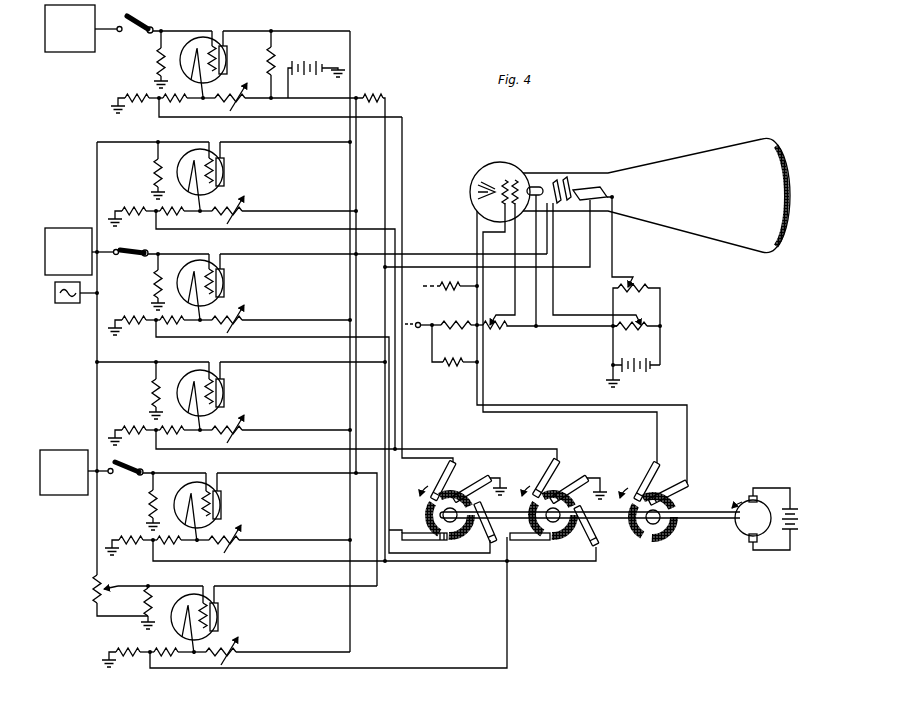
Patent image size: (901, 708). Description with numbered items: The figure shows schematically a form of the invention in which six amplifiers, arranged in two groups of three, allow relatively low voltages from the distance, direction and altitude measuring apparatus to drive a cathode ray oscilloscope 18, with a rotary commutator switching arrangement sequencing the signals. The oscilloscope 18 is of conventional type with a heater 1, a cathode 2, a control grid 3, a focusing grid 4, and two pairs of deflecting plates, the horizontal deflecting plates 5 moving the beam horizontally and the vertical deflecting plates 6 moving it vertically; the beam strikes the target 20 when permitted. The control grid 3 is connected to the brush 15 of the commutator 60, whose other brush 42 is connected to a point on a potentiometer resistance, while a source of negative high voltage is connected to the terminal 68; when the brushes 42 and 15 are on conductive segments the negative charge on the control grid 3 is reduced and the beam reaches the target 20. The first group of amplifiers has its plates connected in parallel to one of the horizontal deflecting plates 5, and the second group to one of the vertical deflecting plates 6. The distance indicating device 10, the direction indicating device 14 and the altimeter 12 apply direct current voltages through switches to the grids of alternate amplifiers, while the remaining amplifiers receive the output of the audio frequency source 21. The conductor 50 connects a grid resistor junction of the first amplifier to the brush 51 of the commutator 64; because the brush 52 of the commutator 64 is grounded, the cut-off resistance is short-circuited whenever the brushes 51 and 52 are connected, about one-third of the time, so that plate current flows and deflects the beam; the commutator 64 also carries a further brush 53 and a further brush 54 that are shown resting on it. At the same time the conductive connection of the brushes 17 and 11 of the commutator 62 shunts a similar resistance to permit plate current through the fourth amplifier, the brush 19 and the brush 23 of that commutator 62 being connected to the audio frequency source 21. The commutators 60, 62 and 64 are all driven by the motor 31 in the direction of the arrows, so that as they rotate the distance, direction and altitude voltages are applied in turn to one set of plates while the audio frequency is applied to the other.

The heater 1 is at (478, 190).
The cathode 2 is at (489, 181).
The control grid 3 is at (504, 178).
The focusing grid 4 is at (516, 178).
The horizontal deflecting plates 5 is at (559, 179).
The vertical deflecting plates 6 is at (588, 186).
The distance indicating device 10 is at (52, 52).
The brush 11 is at (587, 477).
The altimeter 12 is at (78, 450).
The direction indicating device 14 is at (83, 228).
The brush 15 is at (682, 490).
The brush 17 is at (560, 475).
The cathode ray tube 18 is at (635, 193).
The brush 19 is at (529, 540).
The target 20 is at (794, 195).
The source of audio frequency oscillations 21 is at (55, 301).
The brush 23 is at (595, 531).
The motor 31 is at (738, 527).
The brush 42 is at (657, 478).
The conductor 50 is at (408, 163).
The brush 51 is at (455, 474).
The brush 52 is at (487, 477).
The brush 53 is at (428, 542).
The brush 54 is at (495, 524).
The commutator 60 is at (660, 543).
The commutator 62 is at (556, 540).
The commutator 64 is at (458, 538).
The terminal 68 is at (419, 321).